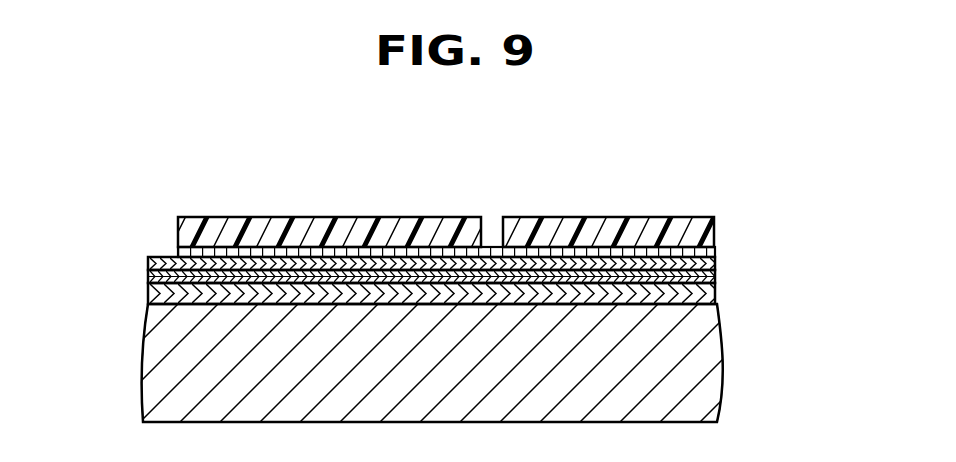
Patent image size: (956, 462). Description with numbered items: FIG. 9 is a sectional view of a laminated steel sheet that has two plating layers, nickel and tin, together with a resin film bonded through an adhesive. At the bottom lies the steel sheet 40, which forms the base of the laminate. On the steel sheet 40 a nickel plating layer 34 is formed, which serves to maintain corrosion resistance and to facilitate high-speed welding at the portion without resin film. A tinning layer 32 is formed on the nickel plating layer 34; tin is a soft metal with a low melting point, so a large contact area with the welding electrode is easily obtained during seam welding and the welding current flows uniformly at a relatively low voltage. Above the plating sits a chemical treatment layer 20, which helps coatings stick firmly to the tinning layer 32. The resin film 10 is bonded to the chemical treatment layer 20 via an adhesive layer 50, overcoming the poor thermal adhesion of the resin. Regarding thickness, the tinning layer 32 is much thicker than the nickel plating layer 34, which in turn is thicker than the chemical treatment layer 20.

The resin film 10 is at (716, 222).
The chemical treatment layer 20 is at (148, 262).
The tinning layer 32 is at (716, 276).
The nickel plating layer 34 is at (716, 293).
The steel sheet 40 is at (710, 370).
The adhesive layer 50 is at (178, 251).